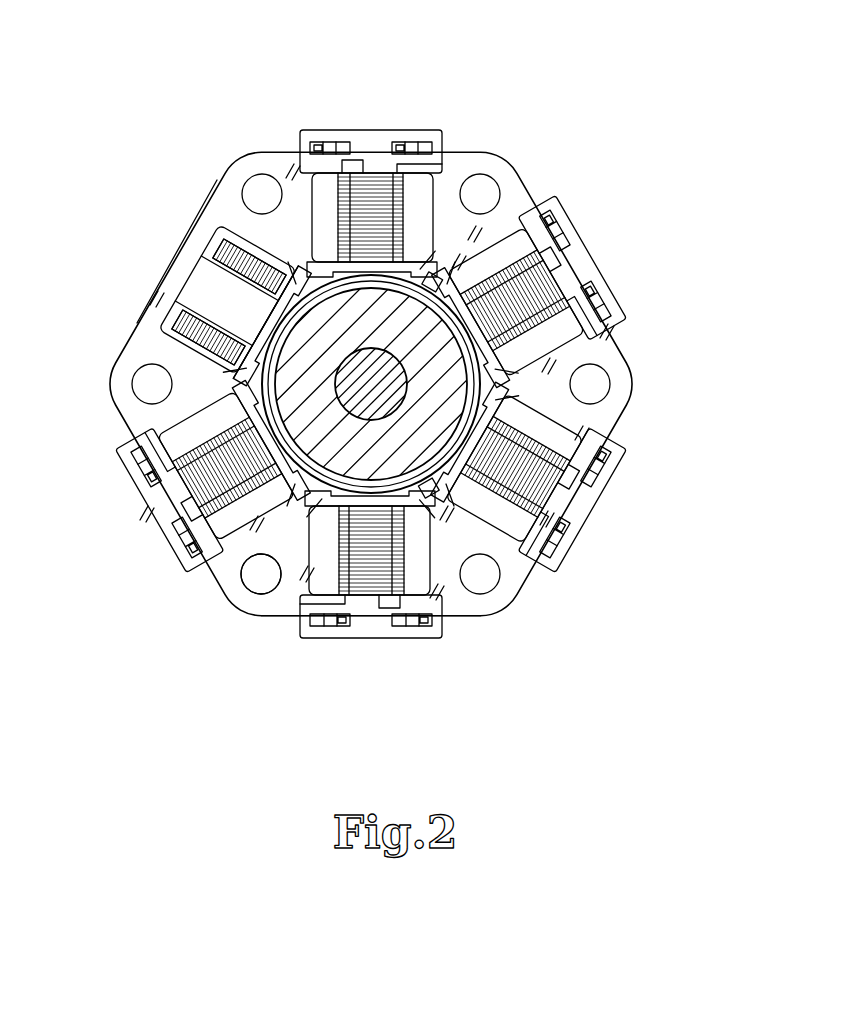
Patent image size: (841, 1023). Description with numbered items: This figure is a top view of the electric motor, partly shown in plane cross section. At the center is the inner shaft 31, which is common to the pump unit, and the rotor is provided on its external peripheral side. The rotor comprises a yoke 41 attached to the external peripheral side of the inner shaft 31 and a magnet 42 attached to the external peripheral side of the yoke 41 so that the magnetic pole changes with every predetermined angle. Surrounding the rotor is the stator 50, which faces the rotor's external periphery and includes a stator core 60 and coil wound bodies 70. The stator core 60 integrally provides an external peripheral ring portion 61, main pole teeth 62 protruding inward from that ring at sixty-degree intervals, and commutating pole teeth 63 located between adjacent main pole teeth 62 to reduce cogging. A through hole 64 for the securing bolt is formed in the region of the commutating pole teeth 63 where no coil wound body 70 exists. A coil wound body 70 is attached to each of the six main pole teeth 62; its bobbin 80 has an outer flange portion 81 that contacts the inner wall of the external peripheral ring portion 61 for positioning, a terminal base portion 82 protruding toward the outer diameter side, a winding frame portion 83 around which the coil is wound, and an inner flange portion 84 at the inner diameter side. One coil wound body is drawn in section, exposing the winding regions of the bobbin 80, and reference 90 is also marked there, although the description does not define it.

The inner shaft 31 is at (232, 563).
The yoke 41 is at (433, 273).
The magnet 42 is at (440, 500).
The stator 50 is at (536, 170).
The stator core 60 is at (250, 613).
The external peripheral ring portion 61 is at (156, 308).
The main pole tooth 62 is at (272, 316).
The commutating pole tooth 63 is at (548, 365).
The through hole 64 is at (595, 388).
The coil wound body 70 is at (396, 100).
The bobbin 80 is at (257, 256).
The outer flange portion 81 is at (222, 242).
The terminal base portion 82 is at (370, 132).
The winding frame portion 83 is at (170, 280).
The inner flange portion 84 is at (352, 282).
The pole base 90 is at (162, 338).